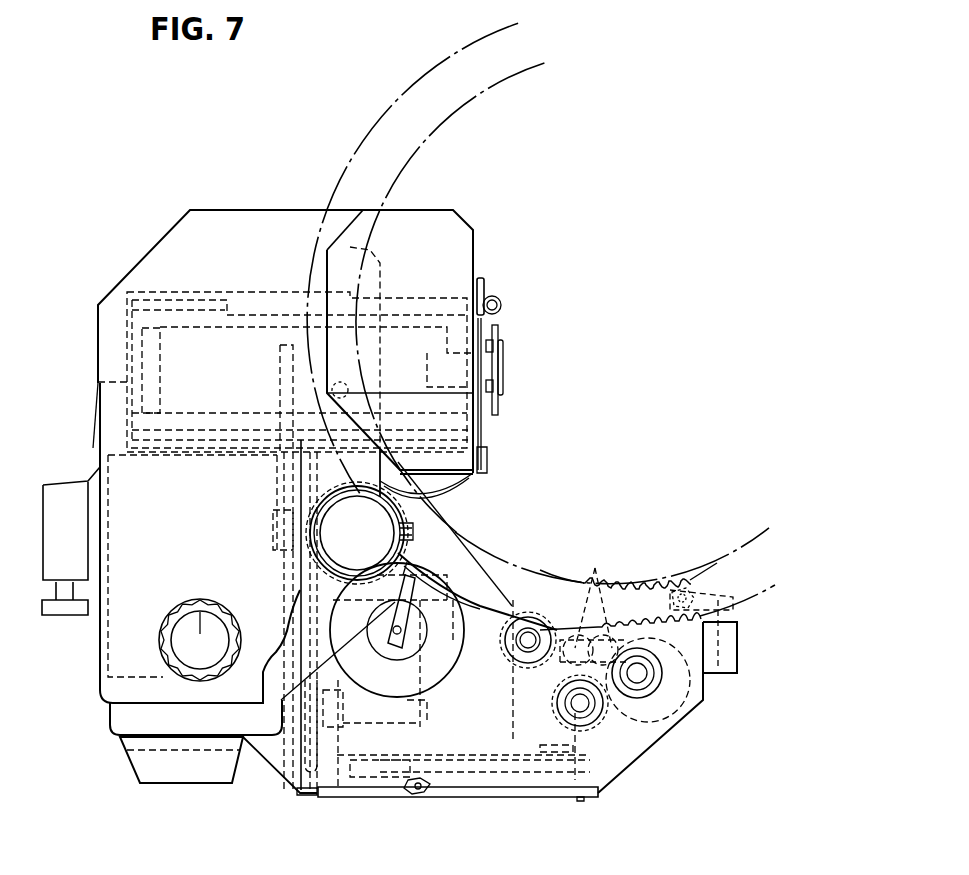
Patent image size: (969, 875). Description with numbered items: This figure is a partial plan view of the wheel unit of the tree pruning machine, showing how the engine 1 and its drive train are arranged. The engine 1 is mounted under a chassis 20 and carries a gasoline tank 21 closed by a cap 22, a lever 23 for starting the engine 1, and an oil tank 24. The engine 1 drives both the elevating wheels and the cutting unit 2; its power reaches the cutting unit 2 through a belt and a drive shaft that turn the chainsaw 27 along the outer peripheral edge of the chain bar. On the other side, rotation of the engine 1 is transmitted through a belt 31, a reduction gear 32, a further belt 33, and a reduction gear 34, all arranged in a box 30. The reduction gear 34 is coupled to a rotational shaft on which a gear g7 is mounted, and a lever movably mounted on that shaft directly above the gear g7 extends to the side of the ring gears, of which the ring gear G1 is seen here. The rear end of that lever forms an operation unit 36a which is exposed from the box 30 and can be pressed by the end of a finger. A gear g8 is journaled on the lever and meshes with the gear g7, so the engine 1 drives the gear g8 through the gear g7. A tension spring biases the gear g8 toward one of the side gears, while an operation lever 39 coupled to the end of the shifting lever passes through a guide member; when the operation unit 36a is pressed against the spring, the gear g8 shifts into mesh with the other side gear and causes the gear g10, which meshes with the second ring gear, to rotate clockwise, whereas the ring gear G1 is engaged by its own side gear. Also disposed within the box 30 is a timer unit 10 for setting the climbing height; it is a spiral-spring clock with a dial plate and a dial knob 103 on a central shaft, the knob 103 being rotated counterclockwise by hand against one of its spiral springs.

The engine 1 is at (153, 792).
The cutting unit 2 is at (513, 349).
The timer unit 10 is at (440, 683).
The chassis 20 is at (105, 323).
The gasoline tank 21 is at (112, 722).
The cap 22 is at (172, 613).
The lever 23 is at (62, 612).
The oil tank 24 is at (383, 523).
The chainsaw 27 is at (497, 418).
The box 30 is at (613, 778).
The belt 31 is at (330, 583).
The reduction gear 32 is at (340, 787).
The belt 33 is at (479, 790).
The reduction gear 34 is at (513, 725).
The operation unit 36a is at (581, 799).
The operation lever 39 is at (468, 596).
The dial knob 103 is at (400, 622).
The gear g7 is at (598, 718).
The gear g8 is at (594, 595).
The gear g10 is at (509, 654).
The ring gear G1 is at (653, 580).